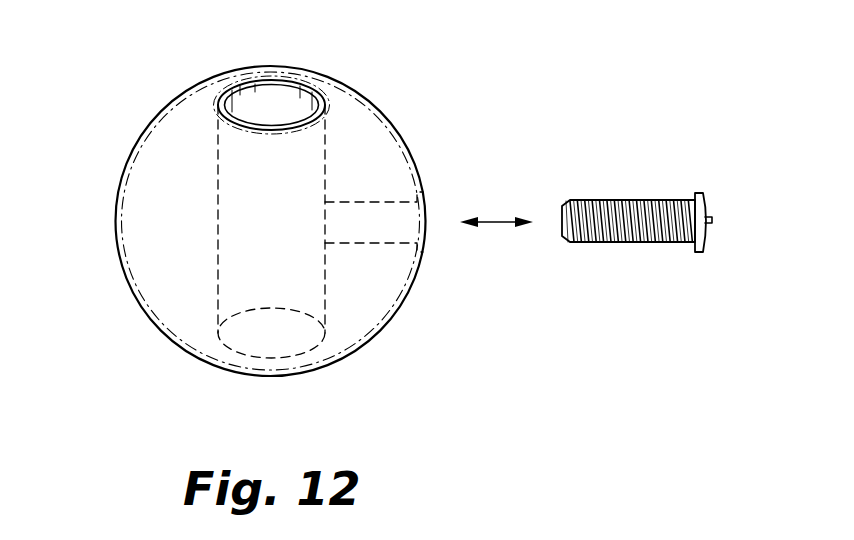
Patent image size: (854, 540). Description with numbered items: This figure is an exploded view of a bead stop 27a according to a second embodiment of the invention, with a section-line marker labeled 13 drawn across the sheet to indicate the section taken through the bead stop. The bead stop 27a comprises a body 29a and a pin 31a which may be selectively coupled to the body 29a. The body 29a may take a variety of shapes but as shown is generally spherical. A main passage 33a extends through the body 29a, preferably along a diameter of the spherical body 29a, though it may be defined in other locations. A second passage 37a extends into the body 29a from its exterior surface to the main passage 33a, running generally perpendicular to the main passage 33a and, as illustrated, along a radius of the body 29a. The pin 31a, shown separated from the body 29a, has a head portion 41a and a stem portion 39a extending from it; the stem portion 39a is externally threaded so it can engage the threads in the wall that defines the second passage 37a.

The section line 13- 13 is at (40, 27).
The bead stop 27a is at (399, 90).
The body 29a is at (180, 267).
The main passage 33a is at (287, 98).
The second passage 37a is at (380, 232).
The pin 31a is at (663, 230).
The stem portion 39a is at (590, 198).
The head portion 41a is at (707, 209).